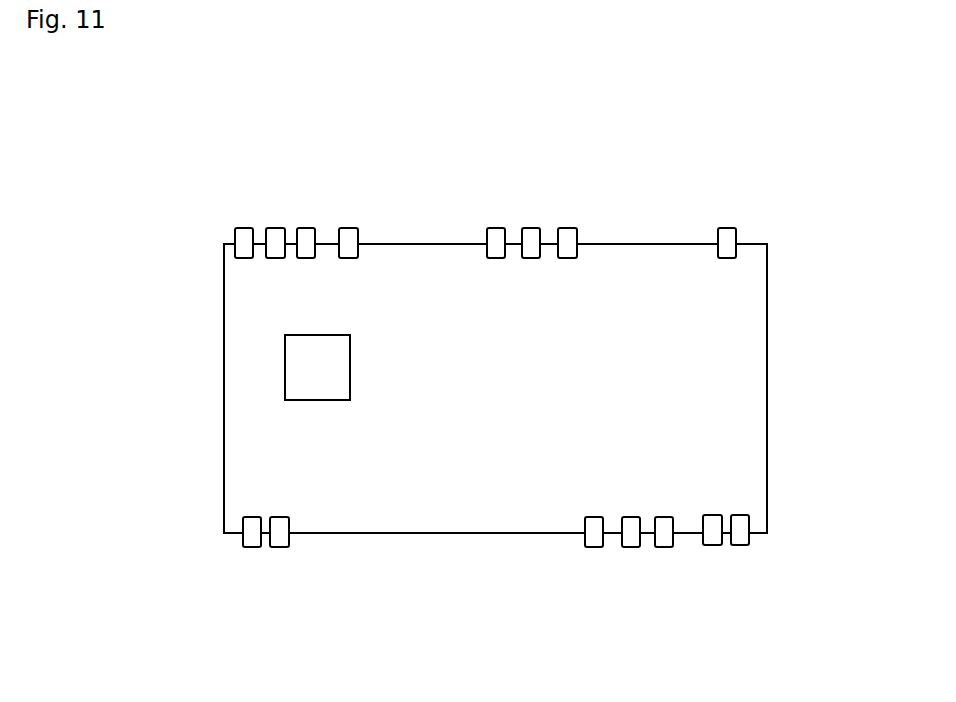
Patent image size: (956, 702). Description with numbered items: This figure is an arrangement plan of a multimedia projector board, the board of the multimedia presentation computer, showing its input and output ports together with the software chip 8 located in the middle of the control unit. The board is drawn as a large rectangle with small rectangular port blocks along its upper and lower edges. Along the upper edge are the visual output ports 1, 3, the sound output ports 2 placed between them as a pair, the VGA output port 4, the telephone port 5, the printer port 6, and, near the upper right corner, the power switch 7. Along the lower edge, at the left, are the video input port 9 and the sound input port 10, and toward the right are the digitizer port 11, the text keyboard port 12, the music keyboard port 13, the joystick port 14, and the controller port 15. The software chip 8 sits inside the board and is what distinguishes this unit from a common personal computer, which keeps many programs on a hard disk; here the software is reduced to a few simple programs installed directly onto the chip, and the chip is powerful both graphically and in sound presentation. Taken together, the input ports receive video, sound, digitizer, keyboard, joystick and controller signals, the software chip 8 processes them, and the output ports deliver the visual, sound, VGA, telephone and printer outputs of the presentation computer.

The visual output port 1 is at (243, 240).
The sound output ports 2 is at (273, 243).
The visual output port 3 is at (349, 238).
The VGA output port 4 is at (494, 238).
The telephone port 5 is at (531, 238).
The printer port 6 is at (567, 238).
The power switch 7 is at (727, 238).
The software chip 8 is at (316, 368).
The video input port 9 is at (250, 540).
The sound input port 10 is at (280, 545).
The digitizer port 11 is at (590, 542).
The text keyboard port 12 is at (626, 543).
The music keyboard port 13 is at (663, 545).
The joystick port 14 is at (717, 545).
The controller port 15 is at (742, 540).